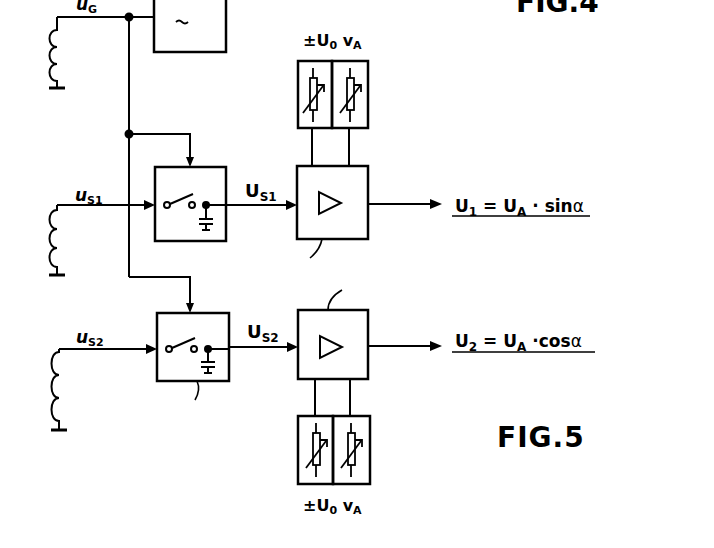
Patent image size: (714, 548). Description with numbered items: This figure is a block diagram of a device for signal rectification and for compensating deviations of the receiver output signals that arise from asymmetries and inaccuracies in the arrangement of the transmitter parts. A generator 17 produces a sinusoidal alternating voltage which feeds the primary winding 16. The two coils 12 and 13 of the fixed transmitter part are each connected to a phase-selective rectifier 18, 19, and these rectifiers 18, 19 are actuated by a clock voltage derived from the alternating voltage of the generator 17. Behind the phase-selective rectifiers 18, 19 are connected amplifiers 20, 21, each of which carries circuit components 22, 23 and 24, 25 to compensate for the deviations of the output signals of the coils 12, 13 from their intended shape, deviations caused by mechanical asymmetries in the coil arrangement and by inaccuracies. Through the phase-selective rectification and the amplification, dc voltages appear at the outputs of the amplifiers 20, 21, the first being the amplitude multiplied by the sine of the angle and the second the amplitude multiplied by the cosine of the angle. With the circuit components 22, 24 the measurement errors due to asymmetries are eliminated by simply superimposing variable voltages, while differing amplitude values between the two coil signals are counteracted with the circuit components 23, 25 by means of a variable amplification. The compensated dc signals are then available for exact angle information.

The coil 12 is at (60, 250).
The coil 13 is at (62, 395).
The primary winding 16 is at (60, 63).
The generator 17 is at (197, 52).
The phase-selective rectifier 18 is at (210, 173).
The phase-selective rectifier 19 is at (184, 381).
The amplifier 20 is at (364, 228).
The amplifier 21 is at (360, 368).
The circuit component 22 is at (298, 82).
The circuit component 23 is at (360, 72).
The circuit component 24 is at (298, 428).
The circuit component 25 is at (362, 423).